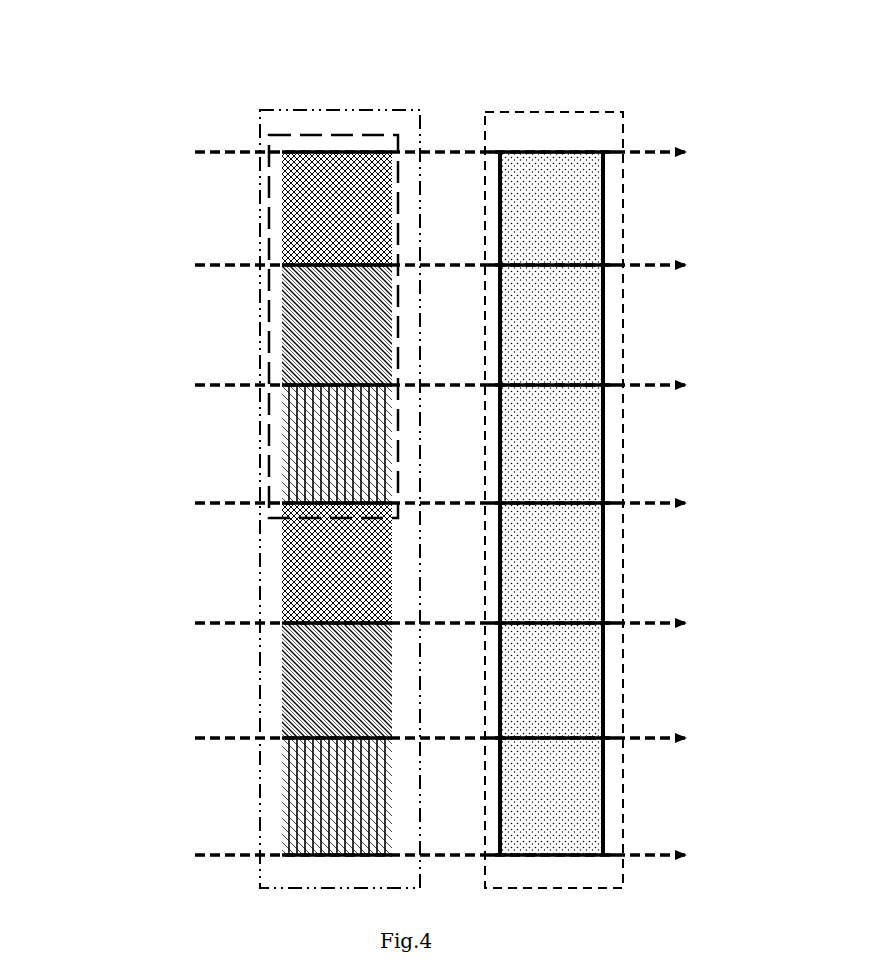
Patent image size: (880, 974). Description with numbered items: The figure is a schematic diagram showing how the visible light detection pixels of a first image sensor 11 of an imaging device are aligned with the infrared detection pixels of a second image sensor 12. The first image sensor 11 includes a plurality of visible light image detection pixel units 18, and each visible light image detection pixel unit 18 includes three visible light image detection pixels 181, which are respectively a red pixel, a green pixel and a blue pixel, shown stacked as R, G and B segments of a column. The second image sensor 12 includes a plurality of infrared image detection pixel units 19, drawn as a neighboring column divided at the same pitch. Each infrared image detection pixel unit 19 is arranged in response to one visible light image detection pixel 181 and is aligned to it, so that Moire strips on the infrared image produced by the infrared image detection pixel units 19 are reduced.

The first image sensor 11 is at (260, 700).
The second image sensor 12 is at (625, 420).
The visible light image detection pixel unit 18 is at (347, 135).
The visible light image detection pixel 181 is at (287, 303).
The infrared image detection pixel unit 19 is at (605, 193).